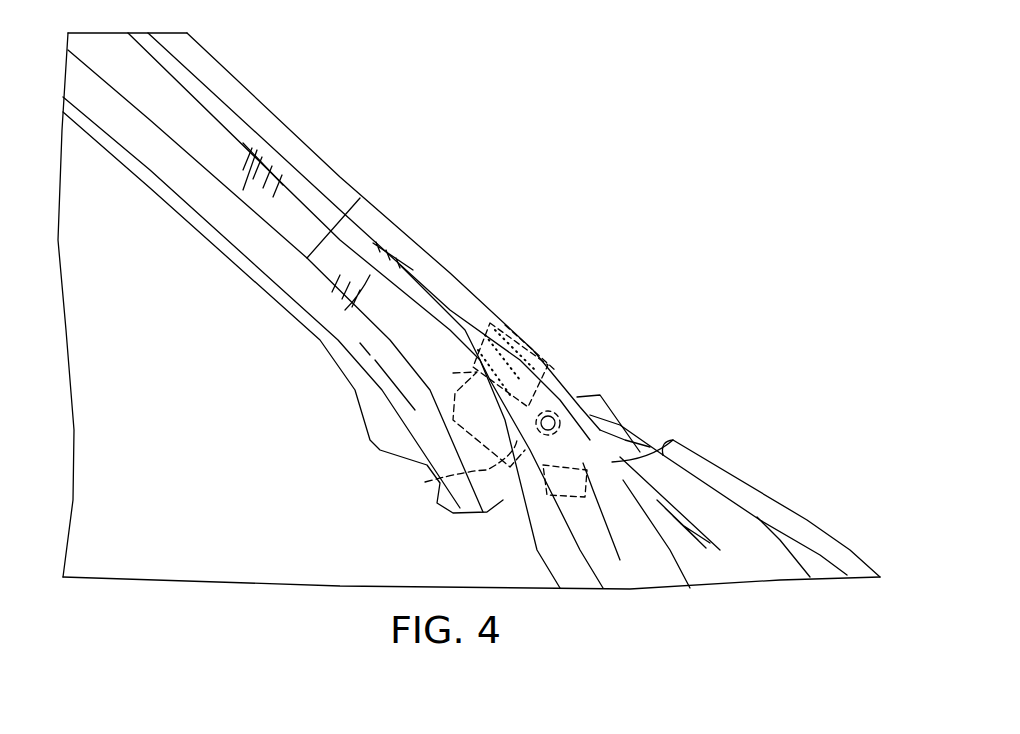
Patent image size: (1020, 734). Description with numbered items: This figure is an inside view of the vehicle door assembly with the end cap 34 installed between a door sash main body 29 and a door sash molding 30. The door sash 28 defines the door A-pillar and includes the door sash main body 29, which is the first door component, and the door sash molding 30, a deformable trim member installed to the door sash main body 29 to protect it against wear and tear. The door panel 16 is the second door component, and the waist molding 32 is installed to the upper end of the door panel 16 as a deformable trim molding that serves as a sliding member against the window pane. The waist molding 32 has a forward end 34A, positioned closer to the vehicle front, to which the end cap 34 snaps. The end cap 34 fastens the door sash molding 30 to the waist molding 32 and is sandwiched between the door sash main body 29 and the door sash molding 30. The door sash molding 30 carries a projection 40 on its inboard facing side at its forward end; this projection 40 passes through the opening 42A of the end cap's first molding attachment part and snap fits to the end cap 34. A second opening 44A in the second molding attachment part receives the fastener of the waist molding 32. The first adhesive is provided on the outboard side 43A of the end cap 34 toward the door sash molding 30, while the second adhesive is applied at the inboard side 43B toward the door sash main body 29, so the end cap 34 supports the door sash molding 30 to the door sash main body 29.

The door panel 16 is at (748, 485).
The door sash 28 is at (372, 115).
The door sash main body 29 is at (187, 120).
The door sash molding 30 is at (607, 400).
The waist molding 32 is at (623, 433).
The end cap 34 is at (530, 318).
The forward end 34A is at (658, 442).
The projection 40 is at (560, 408).
The opening 42A is at (445, 478).
The outboard side 43A is at (480, 340).
The inboard side 43B is at (543, 343).
The opening 44A is at (600, 460).